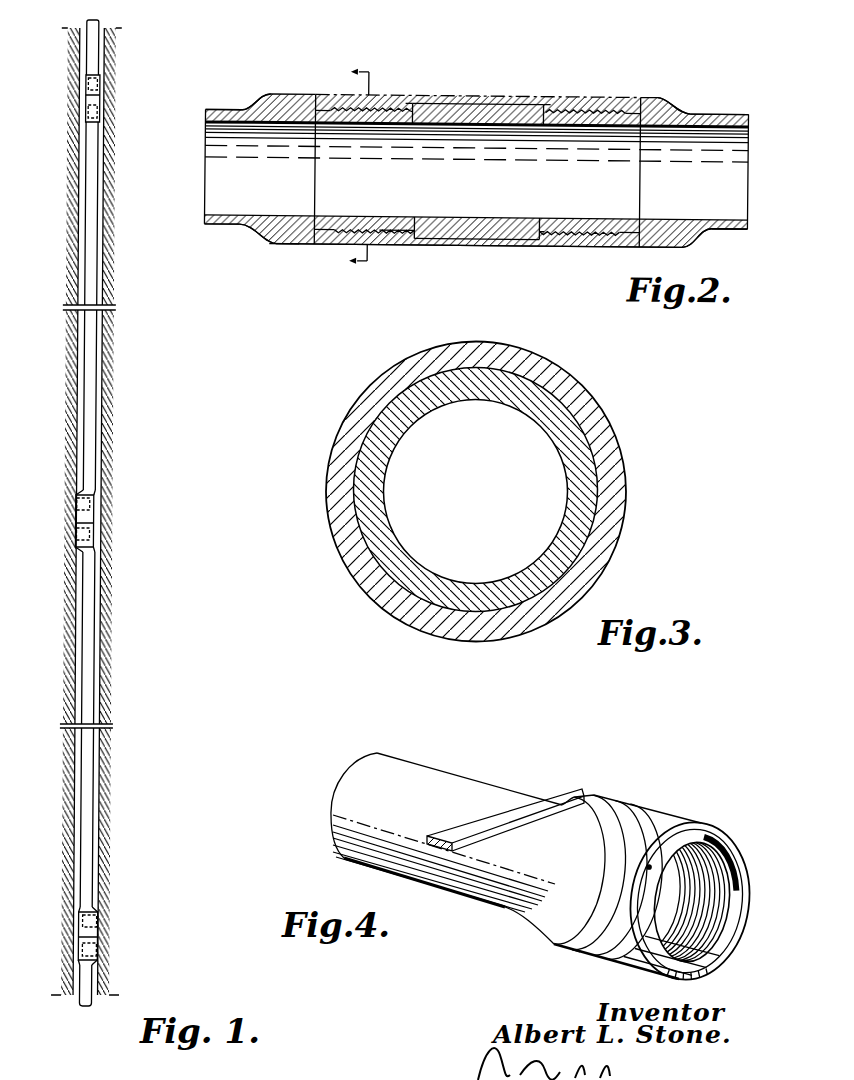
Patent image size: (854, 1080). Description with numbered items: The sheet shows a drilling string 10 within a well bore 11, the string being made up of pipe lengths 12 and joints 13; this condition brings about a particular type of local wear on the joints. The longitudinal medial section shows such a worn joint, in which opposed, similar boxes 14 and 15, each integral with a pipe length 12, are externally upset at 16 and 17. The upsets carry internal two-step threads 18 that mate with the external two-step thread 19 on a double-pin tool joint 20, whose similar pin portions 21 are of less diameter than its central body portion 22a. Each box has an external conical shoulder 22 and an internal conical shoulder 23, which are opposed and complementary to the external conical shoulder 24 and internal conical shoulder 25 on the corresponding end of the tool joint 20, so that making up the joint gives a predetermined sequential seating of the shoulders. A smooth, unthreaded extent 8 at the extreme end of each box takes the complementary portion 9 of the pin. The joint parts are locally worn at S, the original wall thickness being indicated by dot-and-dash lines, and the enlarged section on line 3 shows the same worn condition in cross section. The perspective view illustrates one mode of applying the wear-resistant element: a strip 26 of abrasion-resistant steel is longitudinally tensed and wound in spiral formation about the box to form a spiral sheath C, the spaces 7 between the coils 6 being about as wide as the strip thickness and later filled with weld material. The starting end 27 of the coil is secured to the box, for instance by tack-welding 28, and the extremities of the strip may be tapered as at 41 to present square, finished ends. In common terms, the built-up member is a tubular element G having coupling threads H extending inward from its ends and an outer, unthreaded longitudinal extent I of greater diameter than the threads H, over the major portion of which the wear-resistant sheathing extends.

In FIG. 1, the drilling string 10 is at (105, 283).
In FIG. 1, the well bore 11 is at (80, 236).
In FIG. 1, the pipe length 12 is at (97, 192).
In FIG. 2, the pipe length 12 is at (225, 111).
In FIG. 4, the pipe length 12 is at (402, 800).
In FIG. 1, the joint 13 is at (88, 97).
In FIG. 2, the joint 13 is at (320, 82).
In FIG. 2, the box 14 is at (280, 252).
In FIG. 3, the box 14 is at (617, 417).
In FIG. 4, the box 14 is at (540, 947).
In FIG. 2, the box 15 is at (688, 246).
In FIG. 2, the external upset 16 is at (262, 240).
In FIG. 3, the external upset 16 is at (605, 458).
In FIG. 4, the external upset 16 is at (540, 918).
In FIG. 2, the external upset 17 is at (672, 246).
In FIG. 2, the internal two-step threads 18 is at (340, 234).
In FIG. 4, the internal two-step threads 18 is at (703, 870).
In FIG. 2, the external two-step thread 19 is at (388, 236).
In FIG. 2, the double-pin tool joint 20 is at (498, 250).
In FIG. 2, the pin portion 21 is at (372, 217).
In FIG. 3, the pin portion 21 is at (572, 490).
In FIG. 2, the external conical shoulder 22 is at (413, 103).
In FIG. 4, the external conical shoulder 22 is at (700, 833).
In FIG. 2, the central body portion 22a is at (458, 239).
In FIG. 2, the internal conical shoulder 23 is at (318, 127).
In FIG. 2, the external conical shoulder 24 is at (410, 103).
In FIG. 2, the internal conical shoulder 25 is at (318, 106).
In FIG. 4, the strip 26 is at (490, 823).
In FIG. 4, the starting end 27 is at (560, 970).
In FIG. 4, the tack-welding 28 is at (645, 869).
In FIG. 2, the section line 3 is at (347, 165).
In FIG. 4, the tapered extremity 41 is at (630, 950).
In FIG. 4, the coil 6 is at (630, 903).
In FIG. 4, the space 7 is at (655, 812).
In FIG. 2, the smooth unthreaded extent 8 is at (412, 114).
In FIG. 2, the complementary pin portion 9 is at (402, 239).
In FIG. 4, the spiral sheath C is at (650, 802).
In FIG. 4, the tubular element G is at (545, 932).
In FIG. 4, the coupling thread H is at (702, 933).
In FIG. 4, the outer unthreaded longitudinal extent I is at (548, 890).
In FIG. 2, the locally worn portion S is at (478, 90).
In FIG. 3, the locally worn portion S is at (475, 341).